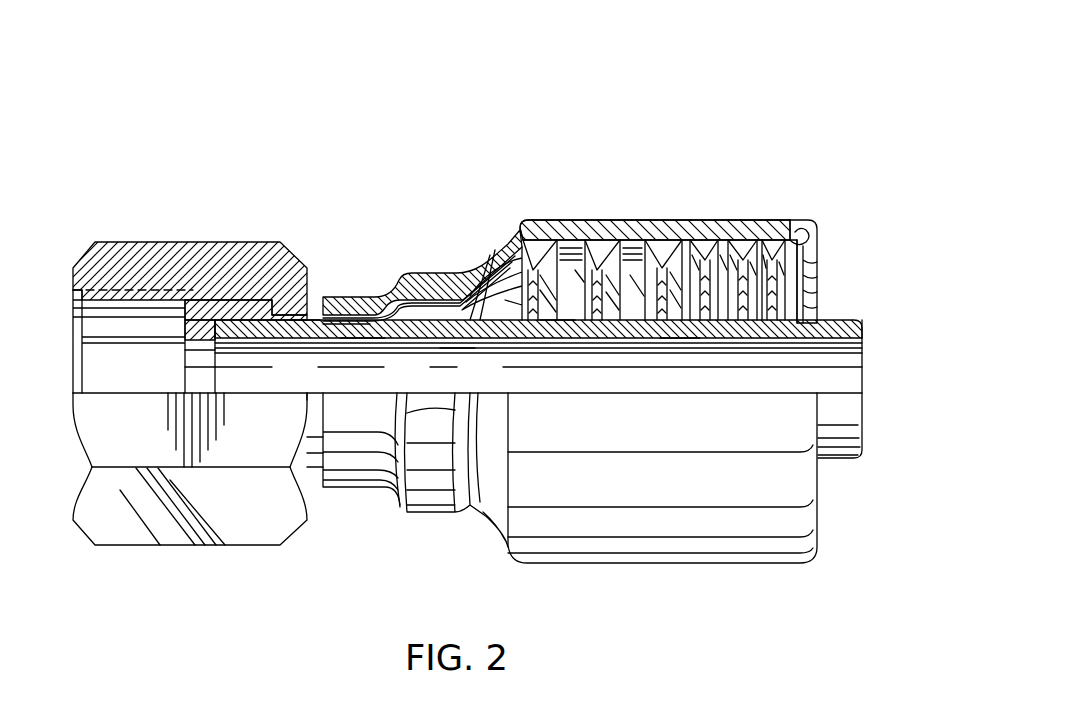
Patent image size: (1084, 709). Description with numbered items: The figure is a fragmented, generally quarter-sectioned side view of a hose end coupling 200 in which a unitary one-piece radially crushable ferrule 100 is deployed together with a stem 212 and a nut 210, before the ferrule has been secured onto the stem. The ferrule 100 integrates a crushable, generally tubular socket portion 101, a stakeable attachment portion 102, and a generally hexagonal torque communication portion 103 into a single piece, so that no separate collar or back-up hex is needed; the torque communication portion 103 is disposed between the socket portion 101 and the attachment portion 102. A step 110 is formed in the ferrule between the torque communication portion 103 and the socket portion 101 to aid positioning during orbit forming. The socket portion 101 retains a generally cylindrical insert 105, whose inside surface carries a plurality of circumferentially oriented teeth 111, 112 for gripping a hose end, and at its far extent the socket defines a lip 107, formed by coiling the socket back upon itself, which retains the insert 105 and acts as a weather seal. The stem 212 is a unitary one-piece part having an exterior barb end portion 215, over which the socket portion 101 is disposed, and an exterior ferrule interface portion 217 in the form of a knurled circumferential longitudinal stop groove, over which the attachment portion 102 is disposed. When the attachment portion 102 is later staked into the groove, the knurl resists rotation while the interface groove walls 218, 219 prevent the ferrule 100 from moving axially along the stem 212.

The hose end coupling 200 is at (841, 128).
The unitary one-piece radially crushable ferrule 100 is at (598, 140).
The step 110 is at (505, 232).
The insert 105 is at (584, 256).
The socket portion 101 is at (725, 208).
The lip 107 is at (840, 225).
The nut 210 is at (215, 233).
The attachment portion 102 is at (345, 297).
The teeth 112 is at (757, 275).
The stem 212 is at (866, 342).
The interface groove wall 218 is at (303, 322).
The exterior ferrule interface portion 217 is at (362, 344).
The interface groove wall 219 is at (458, 340).
The teeth 111 is at (584, 256).
The exterior barb end portion 215 is at (683, 344).
The torque communication portion 103 is at (432, 522).